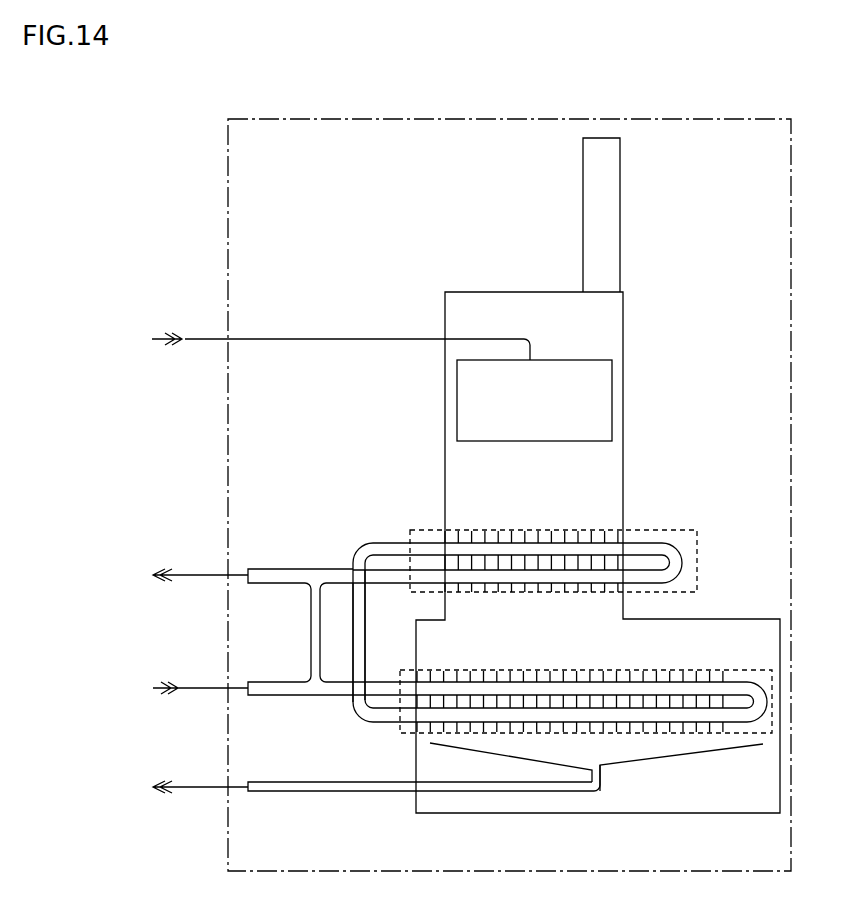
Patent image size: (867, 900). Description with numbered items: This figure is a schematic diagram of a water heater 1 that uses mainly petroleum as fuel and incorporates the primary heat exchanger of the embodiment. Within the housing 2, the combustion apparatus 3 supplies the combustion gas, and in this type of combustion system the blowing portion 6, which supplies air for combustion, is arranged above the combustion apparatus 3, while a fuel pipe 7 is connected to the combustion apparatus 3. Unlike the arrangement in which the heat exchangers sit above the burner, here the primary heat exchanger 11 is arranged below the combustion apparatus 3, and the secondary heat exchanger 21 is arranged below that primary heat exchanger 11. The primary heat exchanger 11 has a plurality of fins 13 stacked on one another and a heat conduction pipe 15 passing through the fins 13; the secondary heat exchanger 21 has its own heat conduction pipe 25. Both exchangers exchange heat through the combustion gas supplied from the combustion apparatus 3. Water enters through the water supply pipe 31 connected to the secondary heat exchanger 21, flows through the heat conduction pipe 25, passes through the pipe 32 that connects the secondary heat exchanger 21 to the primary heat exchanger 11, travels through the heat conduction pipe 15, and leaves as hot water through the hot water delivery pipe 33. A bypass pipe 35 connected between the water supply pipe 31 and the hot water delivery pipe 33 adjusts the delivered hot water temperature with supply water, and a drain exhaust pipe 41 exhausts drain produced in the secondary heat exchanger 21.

The water heater 1 is at (762, 108).
The housing 2 is at (791, 137).
The combustion apparatus 3 is at (583, 402).
The blowing portion 6 is at (605, 222).
The fuel pipe 7 is at (293, 340).
The primary heat exchanger 11 is at (594, 591).
The fins 13 is at (625, 538).
The heat conduction pipe 15 is at (607, 540).
The secondary heat exchanger 21 is at (594, 678).
The heat conduction pipe 25 is at (685, 675).
The water supply pipe 31 is at (277, 688).
The pipe 32 is at (360, 645).
The hot water delivery pipe 33 is at (277, 576).
The bypass pipe 35 is at (311, 620).
The drain exhaust pipe 41 is at (277, 785).